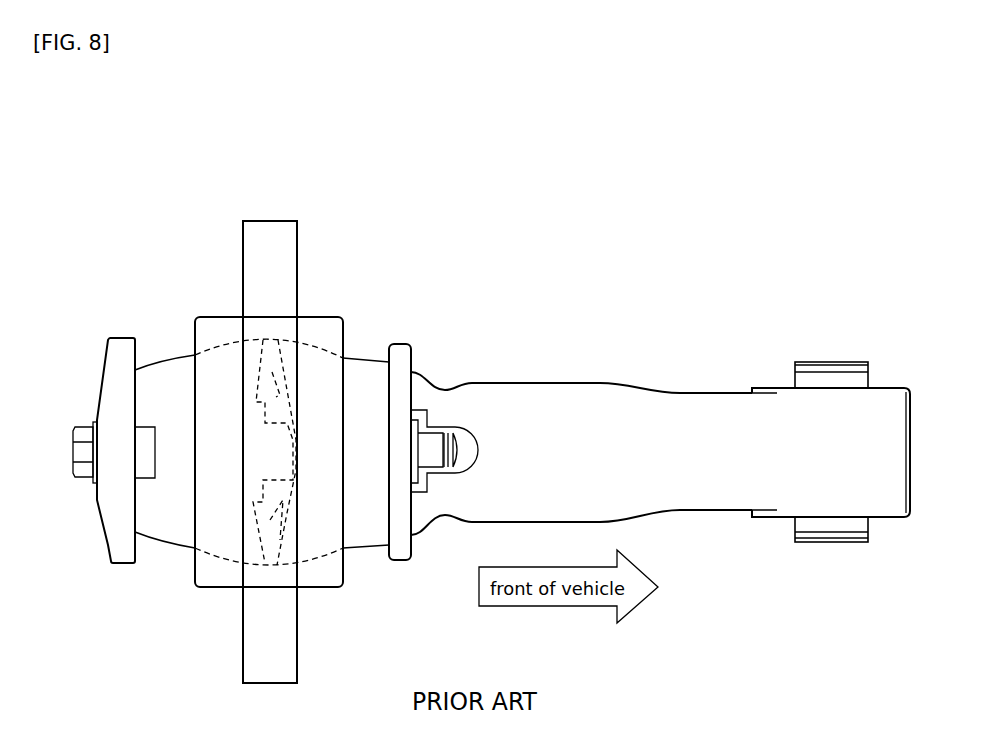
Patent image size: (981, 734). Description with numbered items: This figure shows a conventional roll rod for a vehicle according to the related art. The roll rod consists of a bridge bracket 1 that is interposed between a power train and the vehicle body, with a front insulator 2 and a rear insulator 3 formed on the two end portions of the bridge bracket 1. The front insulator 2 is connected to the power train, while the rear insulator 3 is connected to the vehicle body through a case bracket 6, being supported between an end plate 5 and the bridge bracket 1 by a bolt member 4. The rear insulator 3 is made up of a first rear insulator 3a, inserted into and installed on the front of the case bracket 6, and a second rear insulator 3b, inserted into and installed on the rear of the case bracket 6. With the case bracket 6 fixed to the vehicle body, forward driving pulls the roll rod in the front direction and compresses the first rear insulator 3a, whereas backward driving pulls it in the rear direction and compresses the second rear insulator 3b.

The bridge bracket 1 is at (535, 378).
The front insulator 2 is at (827, 362).
The rear insulator 3 is at (273, 401).
The first rear insulator 3a is at (363, 352).
The second rear insulator 3b is at (173, 357).
The bolt member 4 is at (83, 425).
The end plate 5 is at (105, 358).
The case bracket 6 is at (272, 220).